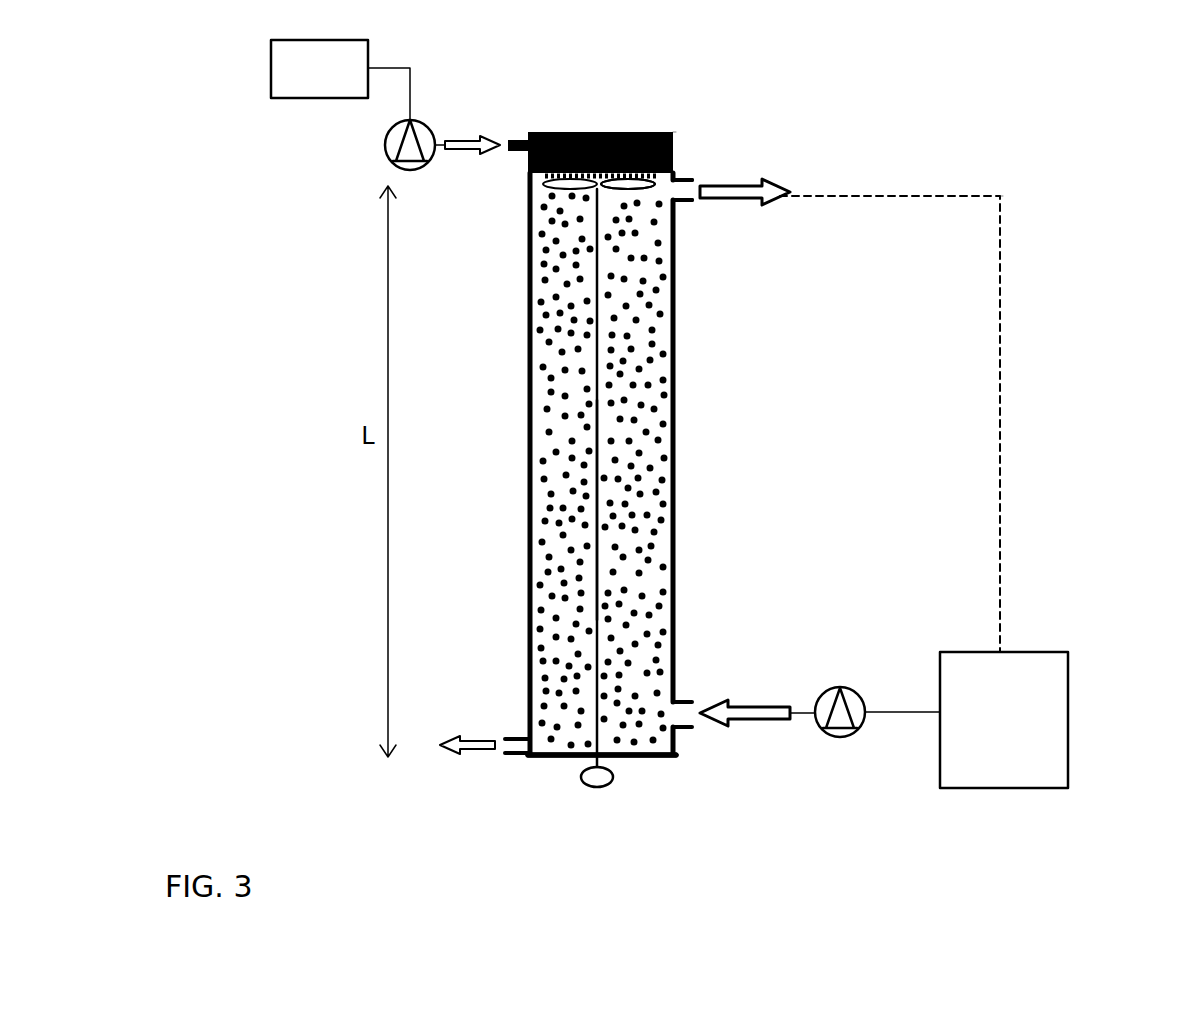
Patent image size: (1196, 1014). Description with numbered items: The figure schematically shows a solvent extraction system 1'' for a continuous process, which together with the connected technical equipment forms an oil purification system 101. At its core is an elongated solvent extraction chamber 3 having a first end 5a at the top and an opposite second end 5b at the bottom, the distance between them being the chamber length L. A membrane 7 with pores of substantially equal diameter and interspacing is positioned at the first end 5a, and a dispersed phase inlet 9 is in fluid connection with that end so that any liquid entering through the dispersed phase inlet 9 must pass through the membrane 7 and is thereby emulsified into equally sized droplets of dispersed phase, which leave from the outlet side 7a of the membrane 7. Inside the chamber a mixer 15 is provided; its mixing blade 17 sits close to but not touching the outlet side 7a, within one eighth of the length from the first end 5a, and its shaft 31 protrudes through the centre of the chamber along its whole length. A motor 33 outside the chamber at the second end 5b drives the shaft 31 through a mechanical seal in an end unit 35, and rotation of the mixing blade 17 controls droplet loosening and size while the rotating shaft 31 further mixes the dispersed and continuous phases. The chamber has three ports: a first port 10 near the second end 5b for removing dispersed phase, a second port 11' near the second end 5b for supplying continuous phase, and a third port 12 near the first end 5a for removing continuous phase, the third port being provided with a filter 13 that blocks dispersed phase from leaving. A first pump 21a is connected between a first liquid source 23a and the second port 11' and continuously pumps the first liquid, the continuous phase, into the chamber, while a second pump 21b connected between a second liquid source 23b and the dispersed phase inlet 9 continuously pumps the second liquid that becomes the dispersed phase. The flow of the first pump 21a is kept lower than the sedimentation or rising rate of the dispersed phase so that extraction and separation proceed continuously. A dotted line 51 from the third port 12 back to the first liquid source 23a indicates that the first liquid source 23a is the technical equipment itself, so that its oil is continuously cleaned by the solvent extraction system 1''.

The solvent extraction chamber 3 is at (530, 312).
The first end 5a is at (690, 154).
The second end 5b is at (636, 778).
The membrane 7 is at (548, 180).
The outlet side of the membrane 7a is at (552, 190).
The dispersed phase inlet 9 is at (522, 138).
The first port 10 is at (512, 738).
The second port 11' is at (732, 665).
The third port 12 is at (682, 200).
The filter 13 is at (690, 182).
The mixer 15 is at (610, 312).
The mixing blade 17 is at (628, 188).
The first pump 21a is at (838, 688).
The second pump 21b is at (385, 145).
The first liquid source 23a is at (1004, 720).
The second liquid source 23b is at (319, 69).
The shaft 31 is at (597, 508).
The motor 33 is at (585, 787).
The end unit 35 is at (546, 760).
The dotted line 51 is at (1003, 436).
The solvent extraction system 1'' is at (772, 112).
The oil purification system 101 is at (1124, 180).